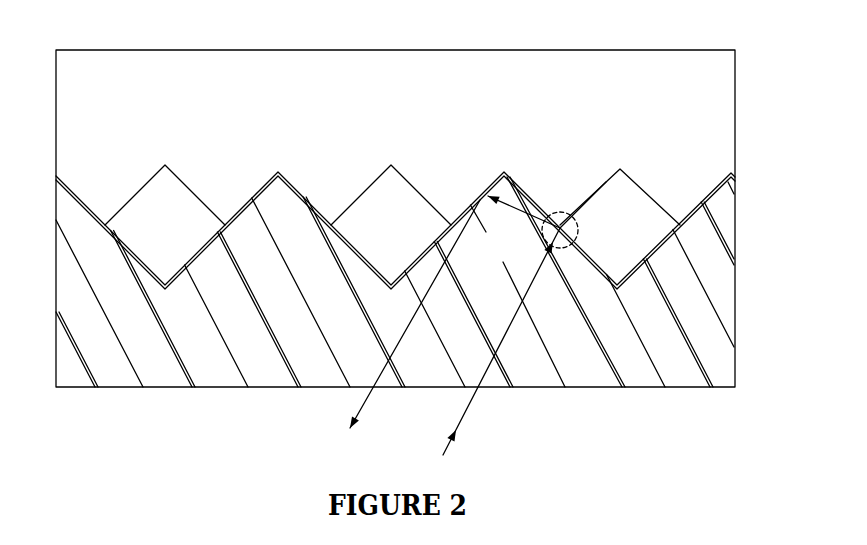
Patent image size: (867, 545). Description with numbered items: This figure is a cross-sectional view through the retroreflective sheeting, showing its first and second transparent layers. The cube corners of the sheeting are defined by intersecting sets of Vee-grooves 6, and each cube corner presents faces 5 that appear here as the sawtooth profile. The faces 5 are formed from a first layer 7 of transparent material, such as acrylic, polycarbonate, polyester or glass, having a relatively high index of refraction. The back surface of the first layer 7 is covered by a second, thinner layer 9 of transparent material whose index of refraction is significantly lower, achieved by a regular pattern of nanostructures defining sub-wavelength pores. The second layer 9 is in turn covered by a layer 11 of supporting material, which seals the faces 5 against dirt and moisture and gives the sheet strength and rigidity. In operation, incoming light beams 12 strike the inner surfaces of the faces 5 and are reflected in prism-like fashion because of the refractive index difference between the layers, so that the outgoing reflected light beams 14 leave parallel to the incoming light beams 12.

The layer of supporting material 11 is at (117, 107).
The faces 5 is at (311, 190).
The Vee-grooves 6 is at (165, 280).
The first layer 7 is at (508, 257).
The second layer 9 is at (527, 194).
The incoming light beams 12 is at (473, 396).
The outgoing reflected light beams 14 is at (365, 400).